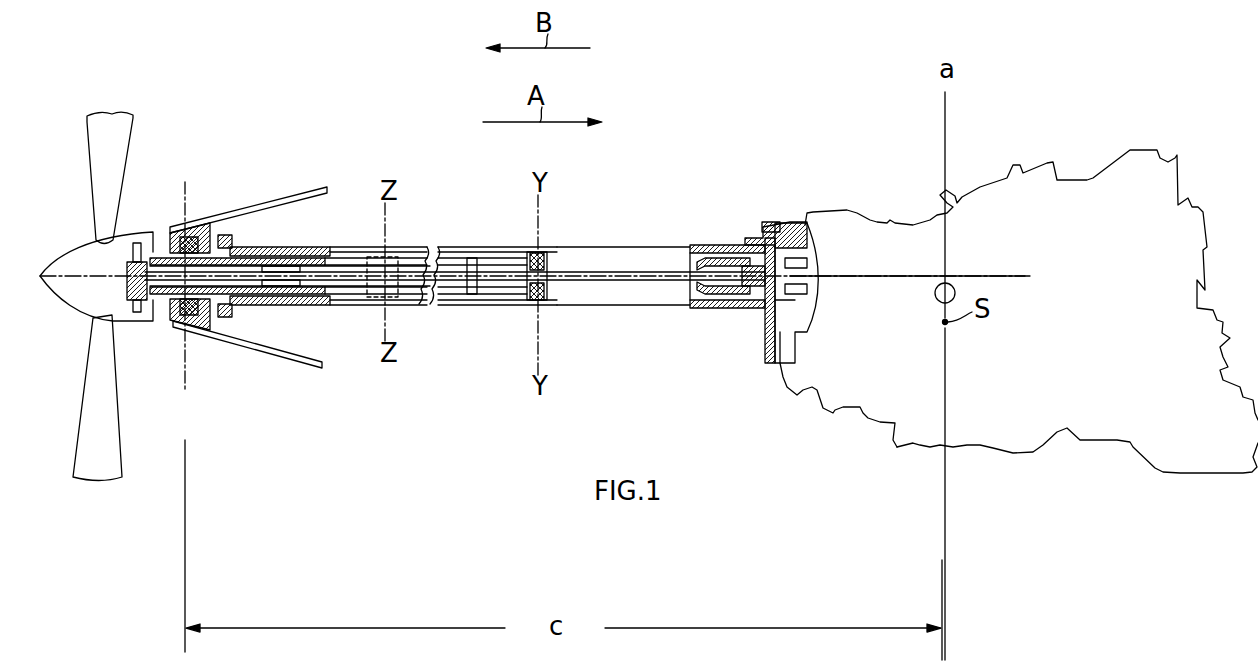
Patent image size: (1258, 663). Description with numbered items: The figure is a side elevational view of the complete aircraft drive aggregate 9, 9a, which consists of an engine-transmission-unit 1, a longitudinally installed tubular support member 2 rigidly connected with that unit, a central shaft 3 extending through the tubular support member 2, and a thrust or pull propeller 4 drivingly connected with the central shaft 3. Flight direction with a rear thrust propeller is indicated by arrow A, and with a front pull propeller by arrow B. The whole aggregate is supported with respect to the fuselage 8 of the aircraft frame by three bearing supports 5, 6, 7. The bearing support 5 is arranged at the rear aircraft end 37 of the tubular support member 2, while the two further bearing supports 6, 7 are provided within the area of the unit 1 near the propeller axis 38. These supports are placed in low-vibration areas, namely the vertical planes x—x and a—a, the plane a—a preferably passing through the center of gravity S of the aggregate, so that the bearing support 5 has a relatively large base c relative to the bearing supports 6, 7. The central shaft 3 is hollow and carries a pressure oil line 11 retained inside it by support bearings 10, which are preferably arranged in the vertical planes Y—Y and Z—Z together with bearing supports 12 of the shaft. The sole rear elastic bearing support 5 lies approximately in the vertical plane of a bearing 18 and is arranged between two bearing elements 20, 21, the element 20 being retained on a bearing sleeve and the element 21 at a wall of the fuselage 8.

The engine-transmission-unit 1 is at (925, 180).
The tubular support member 2 is at (622, 247).
The central shaft 3 is at (503, 305).
The propeller 4 is at (118, 153).
The bearing support 5 is at (193, 228).
The bearing support 6 is at (923, 270).
The bearing support 7 is at (940, 283).
The fuselage 8 is at (306, 352).
The drive aggregate 9 is at (1070, 425).
The drive aggregate 9a is at (833, 370).
The support bearings 10 is at (527, 266).
The pressure oil line 11 is at (323, 248).
The bearing supports 12 is at (395, 256).
The bearing 18 is at (167, 331).
The bearing element 20 is at (168, 238).
The bearing element 21 is at (228, 214).
The rear aircraft end 37 is at (175, 350).
The propeller axis 38 is at (998, 260).